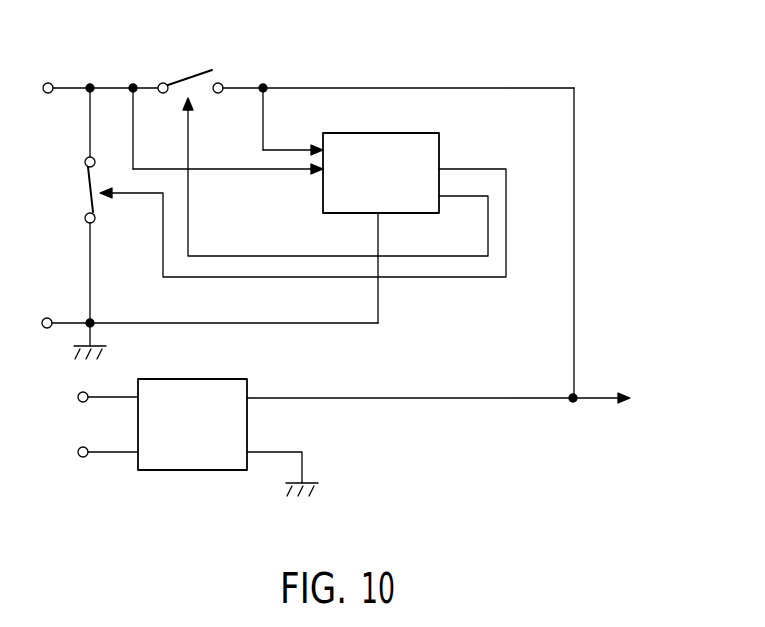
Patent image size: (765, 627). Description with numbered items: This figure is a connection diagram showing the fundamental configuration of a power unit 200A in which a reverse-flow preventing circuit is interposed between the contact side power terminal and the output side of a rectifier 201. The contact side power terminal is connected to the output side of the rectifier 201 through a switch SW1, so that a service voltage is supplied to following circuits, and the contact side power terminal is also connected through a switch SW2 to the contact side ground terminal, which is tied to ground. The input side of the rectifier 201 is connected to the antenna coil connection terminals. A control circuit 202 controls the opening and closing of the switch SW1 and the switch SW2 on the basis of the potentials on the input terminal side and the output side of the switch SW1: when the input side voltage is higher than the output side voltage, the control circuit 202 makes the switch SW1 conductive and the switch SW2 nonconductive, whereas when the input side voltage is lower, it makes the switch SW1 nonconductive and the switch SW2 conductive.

The power unit 200A is at (701, 67).
The rectifier 201 is at (202, 379).
The control circuit 202 is at (403, 133).
The switch SW1 is at (192, 75).
The switch SW2 is at (87, 186).